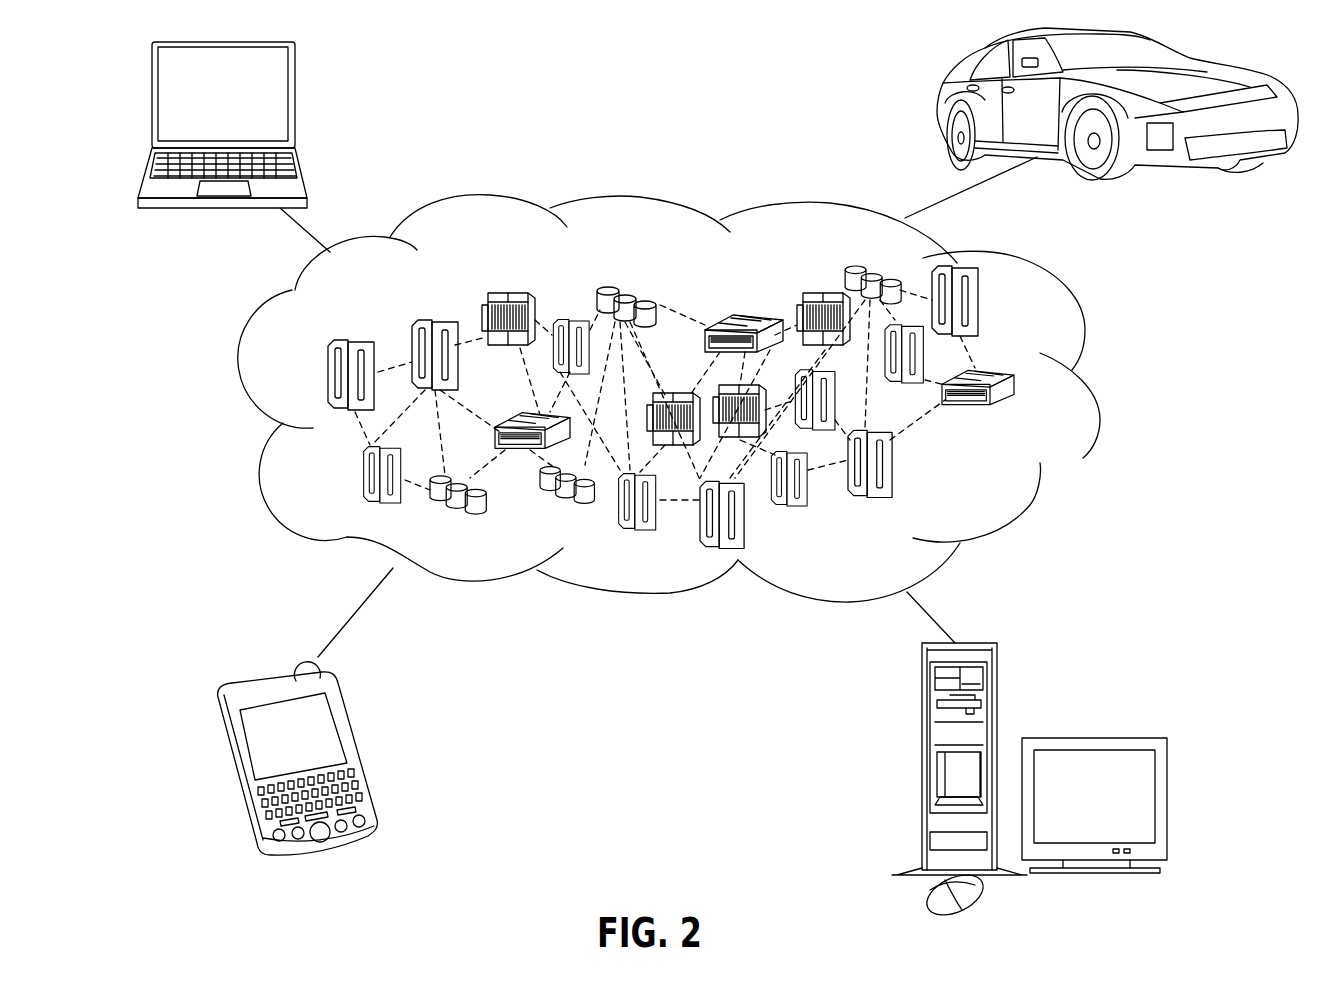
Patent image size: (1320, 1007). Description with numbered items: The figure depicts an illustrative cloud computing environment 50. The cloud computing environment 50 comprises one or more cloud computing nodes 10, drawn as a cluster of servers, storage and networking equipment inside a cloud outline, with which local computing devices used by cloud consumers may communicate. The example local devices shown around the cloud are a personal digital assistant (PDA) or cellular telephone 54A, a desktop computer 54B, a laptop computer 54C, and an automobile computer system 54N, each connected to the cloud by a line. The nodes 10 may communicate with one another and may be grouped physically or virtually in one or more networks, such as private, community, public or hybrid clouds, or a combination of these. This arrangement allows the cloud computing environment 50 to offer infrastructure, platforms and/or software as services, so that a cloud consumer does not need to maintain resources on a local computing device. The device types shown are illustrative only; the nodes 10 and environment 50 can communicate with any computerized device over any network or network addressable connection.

The cloud computing nodes 10 is at (1000, 489).
The cloud computing environment 50 is at (1090, 390).
The personal digital assistant (PDA) or cellular telephone 54A is at (347, 718).
The desktop computer 54B is at (920, 702).
The laptop computer 54C is at (295, 78).
The automobile computer system 54N is at (940, 97).